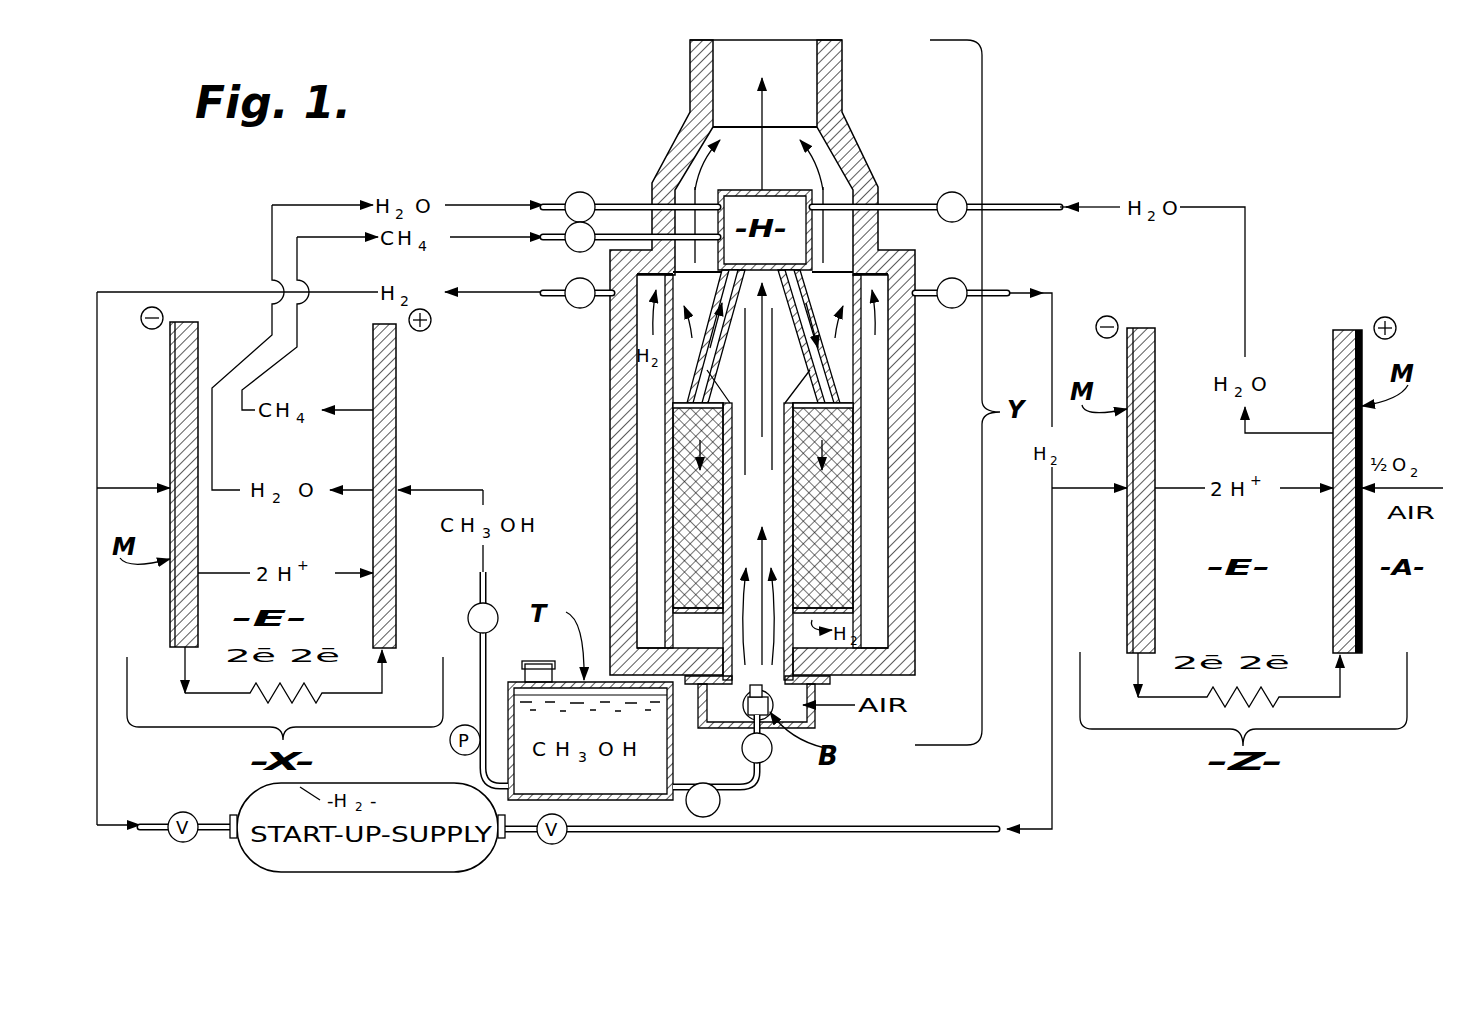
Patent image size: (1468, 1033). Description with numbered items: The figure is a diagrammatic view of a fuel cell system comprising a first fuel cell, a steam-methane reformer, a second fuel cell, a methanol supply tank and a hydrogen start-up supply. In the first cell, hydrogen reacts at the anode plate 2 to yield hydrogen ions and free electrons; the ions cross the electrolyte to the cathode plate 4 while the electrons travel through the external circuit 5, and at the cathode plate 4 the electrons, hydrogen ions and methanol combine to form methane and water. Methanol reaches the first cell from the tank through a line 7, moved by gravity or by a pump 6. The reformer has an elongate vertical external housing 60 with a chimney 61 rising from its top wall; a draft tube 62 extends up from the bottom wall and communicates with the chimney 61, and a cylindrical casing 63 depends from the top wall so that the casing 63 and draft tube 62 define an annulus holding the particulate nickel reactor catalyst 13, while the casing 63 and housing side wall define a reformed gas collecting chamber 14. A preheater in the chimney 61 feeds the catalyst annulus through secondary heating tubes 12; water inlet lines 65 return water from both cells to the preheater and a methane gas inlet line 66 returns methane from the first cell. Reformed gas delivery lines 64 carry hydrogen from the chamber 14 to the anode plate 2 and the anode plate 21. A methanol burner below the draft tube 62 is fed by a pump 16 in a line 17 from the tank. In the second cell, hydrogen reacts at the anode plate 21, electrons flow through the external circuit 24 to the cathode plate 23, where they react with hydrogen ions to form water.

The anode plate 2 is at (200, 520).
The cathode plate 4 is at (373, 541).
The external circuit 5 is at (340, 694).
The pump 6 is at (449, 742).
The line 7 is at (490, 580).
The secondary heating tubes 12 is at (820, 290).
The reactor catalyst 13 is at (857, 452).
The reformed gas collecting chamber 14 is at (870, 533).
The pump 16 is at (720, 805).
The line 17 is at (760, 774).
The anode plate 21 is at (1155, 365).
The cathode plate 23 is at (1333, 365).
The external circuit 24 is at (1283, 700).
The external housing 60 is at (608, 428).
The chimney 61 is at (690, 66).
The draft tube 62 is at (722, 628).
The casing 63 is at (892, 347).
The reformed gas delivery line 64 is at (548, 298).
The water inlet line 65 is at (550, 205).
The methane gas inlet line 66 is at (552, 240).